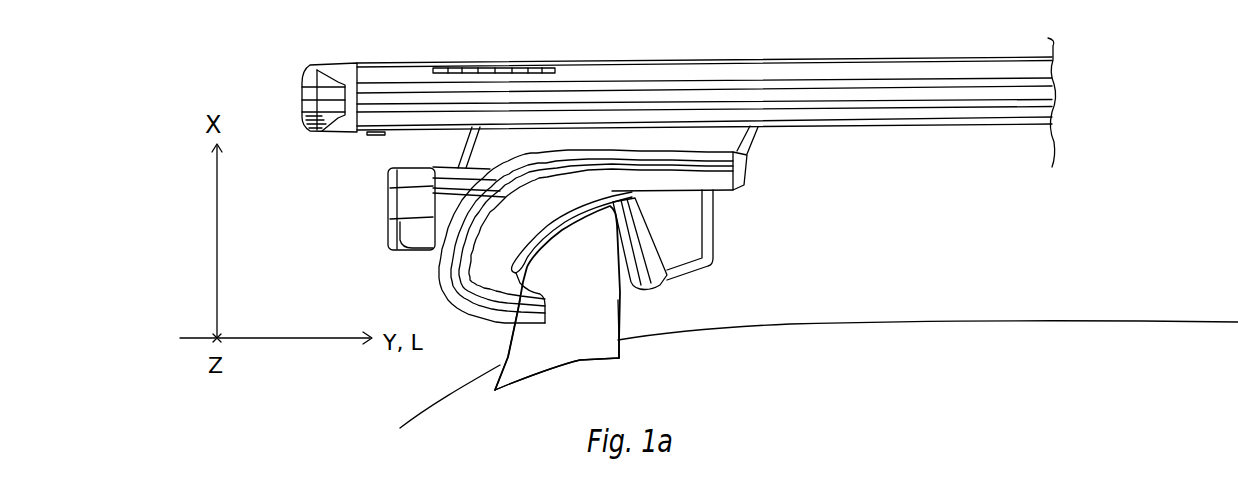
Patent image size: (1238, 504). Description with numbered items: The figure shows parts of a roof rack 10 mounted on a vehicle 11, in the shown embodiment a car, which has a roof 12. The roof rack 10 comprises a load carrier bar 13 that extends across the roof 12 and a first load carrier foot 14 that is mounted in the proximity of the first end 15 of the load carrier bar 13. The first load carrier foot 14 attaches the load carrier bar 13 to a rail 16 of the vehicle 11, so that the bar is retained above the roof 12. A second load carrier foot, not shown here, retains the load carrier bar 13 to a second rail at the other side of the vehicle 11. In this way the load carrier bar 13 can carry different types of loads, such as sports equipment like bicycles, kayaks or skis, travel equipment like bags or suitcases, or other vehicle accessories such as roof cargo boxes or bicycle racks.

The roof rack 10 is at (872, 43).
The vehicle 11 is at (819, 357).
The roof 12 is at (823, 324).
The load carrier bar 13 is at (750, 58).
The first load carrier foot 14 is at (745, 190).
The first end 15 is at (355, 60).
The rail 16 is at (613, 302).